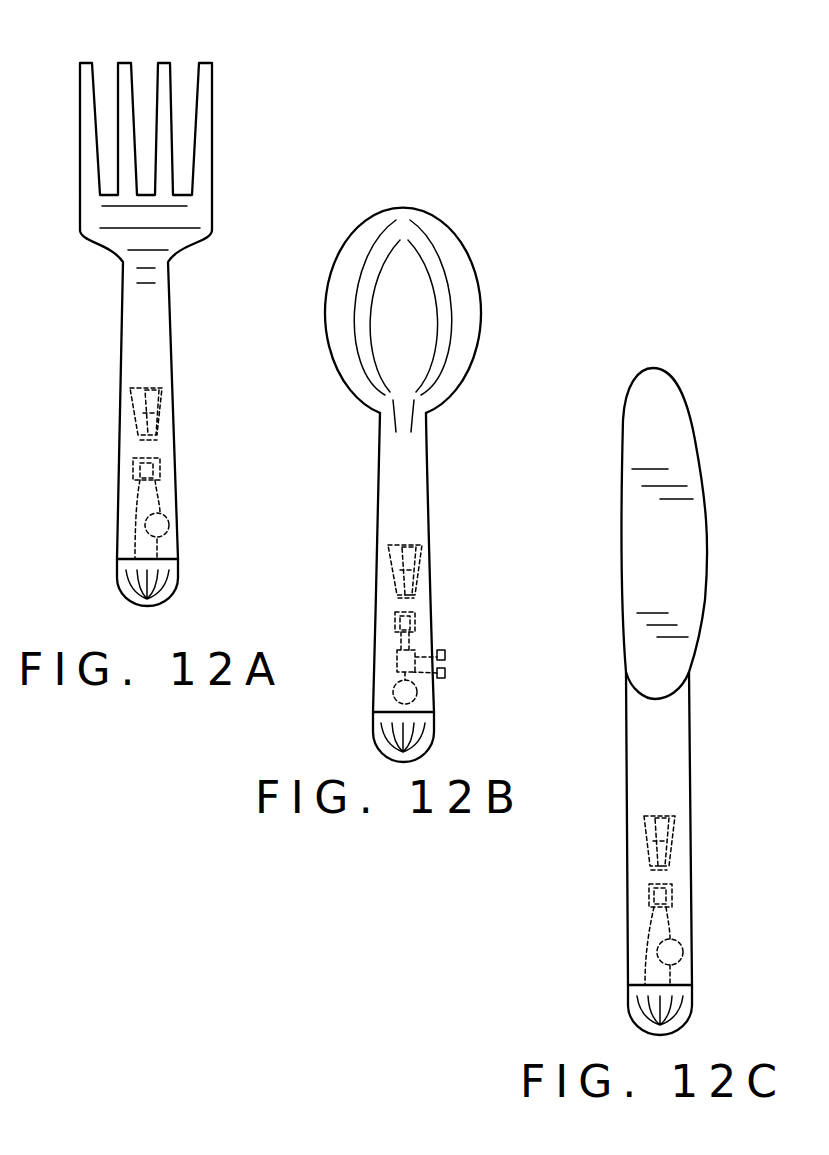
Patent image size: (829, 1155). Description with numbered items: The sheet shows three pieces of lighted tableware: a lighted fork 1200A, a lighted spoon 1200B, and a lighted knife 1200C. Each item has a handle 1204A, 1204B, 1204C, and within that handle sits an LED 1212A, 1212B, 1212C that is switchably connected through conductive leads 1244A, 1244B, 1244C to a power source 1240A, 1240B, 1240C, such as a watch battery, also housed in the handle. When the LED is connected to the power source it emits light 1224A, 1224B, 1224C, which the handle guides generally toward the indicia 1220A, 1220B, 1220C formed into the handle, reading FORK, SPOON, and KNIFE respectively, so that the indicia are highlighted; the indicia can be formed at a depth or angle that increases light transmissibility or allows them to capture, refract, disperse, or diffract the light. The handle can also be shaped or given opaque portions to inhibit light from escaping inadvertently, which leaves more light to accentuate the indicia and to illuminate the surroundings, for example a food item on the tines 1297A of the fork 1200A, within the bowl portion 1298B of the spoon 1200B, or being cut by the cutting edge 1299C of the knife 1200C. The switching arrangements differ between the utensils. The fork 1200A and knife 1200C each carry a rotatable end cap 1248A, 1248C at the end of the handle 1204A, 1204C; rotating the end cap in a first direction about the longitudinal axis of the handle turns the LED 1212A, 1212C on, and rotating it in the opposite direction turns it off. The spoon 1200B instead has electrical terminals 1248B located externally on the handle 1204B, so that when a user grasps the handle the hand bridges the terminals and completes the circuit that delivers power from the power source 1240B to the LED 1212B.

In FIG. 12A, the lighted fork 1200A is at (151, 310).
In FIG. 12A, the tines 1297A is at (203, 62).
In FIG. 12A, the handle 1204A is at (178, 413).
In FIG. 12A, the indicia 1220A is at (165, 343).
In FIG. 12A, the light 1224A is at (133, 400).
In FIG. 12A, the LED 1212A is at (133, 465).
In FIG. 12A, the conductive leads 1244A is at (152, 490).
In FIG. 12A, the power source 1240A is at (168, 522).
In FIG. 12A, the rotatable end cap 1248A is at (119, 586).
In FIG. 12B, the lighted spoon 1200B is at (419, 439).
In FIG. 12B, the bowl portion 1298B is at (428, 212).
In FIG. 12B, the handle 1204B is at (432, 555).
In FIG. 12B, the indicia 1220B is at (422, 502).
In FIG. 12B, the light 1224B is at (388, 560).
In FIG. 12B, the LED 1212B is at (397, 618).
In FIG. 12B, the conductive leads 1244B is at (397, 665).
In FIG. 12B, the electrical terminals 1248B is at (445, 673).
In FIG. 12B, the power source 1240B is at (418, 692).
In FIG. 12C, the lighted knife 1200C is at (664, 655).
In FIG. 12C, the cutting edge 1299C is at (700, 462).
In FIG. 12C, the handle 1204C is at (696, 848).
In FIG. 12C, the indicia 1220C is at (682, 743).
In FIG. 12C, the light 1224C is at (645, 836).
In FIG. 12C, the LED 1212C is at (649, 884).
In FIG. 12C, the conductive leads 1244C is at (649, 922).
In FIG. 12C, the power source 1240C is at (683, 961).
In FIG. 12C, the rotatable end cap 1248C is at (630, 1017).